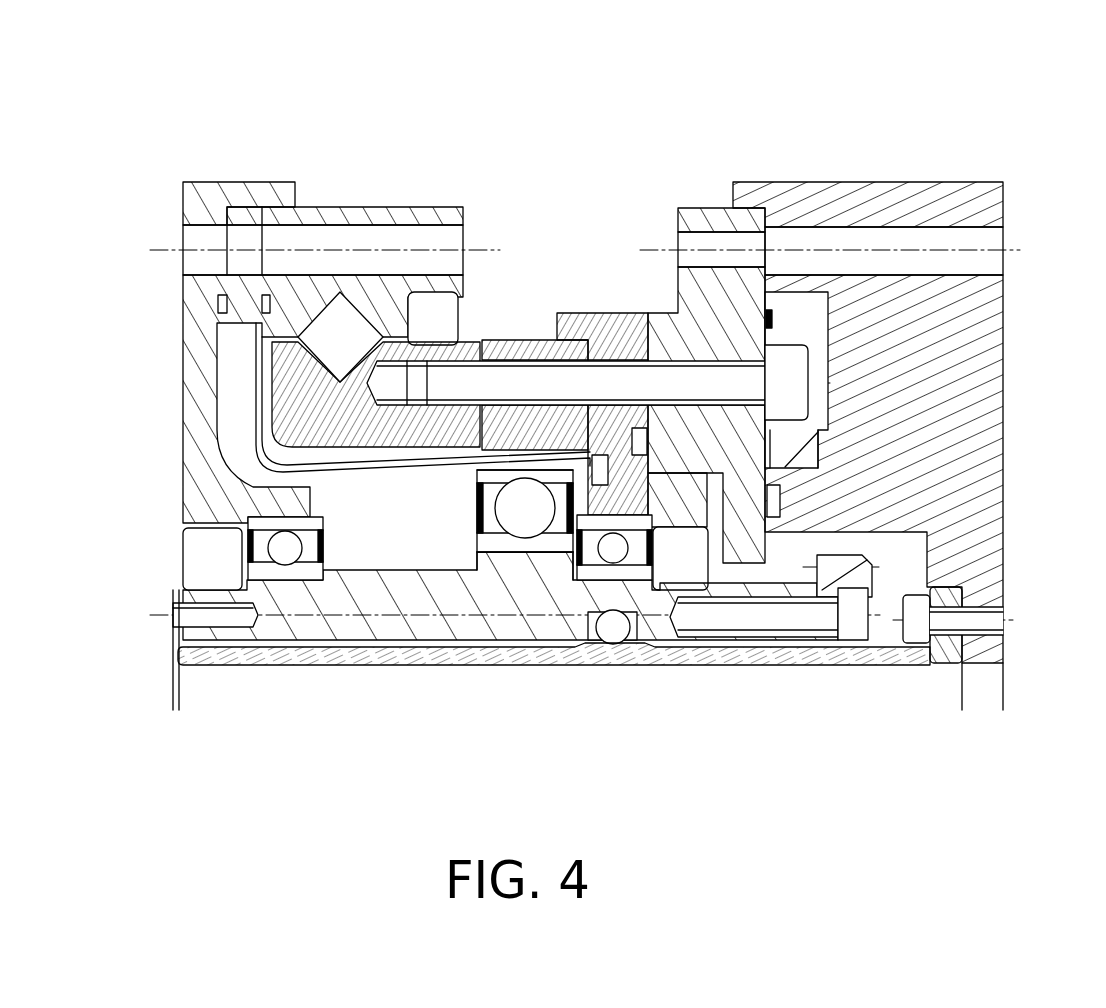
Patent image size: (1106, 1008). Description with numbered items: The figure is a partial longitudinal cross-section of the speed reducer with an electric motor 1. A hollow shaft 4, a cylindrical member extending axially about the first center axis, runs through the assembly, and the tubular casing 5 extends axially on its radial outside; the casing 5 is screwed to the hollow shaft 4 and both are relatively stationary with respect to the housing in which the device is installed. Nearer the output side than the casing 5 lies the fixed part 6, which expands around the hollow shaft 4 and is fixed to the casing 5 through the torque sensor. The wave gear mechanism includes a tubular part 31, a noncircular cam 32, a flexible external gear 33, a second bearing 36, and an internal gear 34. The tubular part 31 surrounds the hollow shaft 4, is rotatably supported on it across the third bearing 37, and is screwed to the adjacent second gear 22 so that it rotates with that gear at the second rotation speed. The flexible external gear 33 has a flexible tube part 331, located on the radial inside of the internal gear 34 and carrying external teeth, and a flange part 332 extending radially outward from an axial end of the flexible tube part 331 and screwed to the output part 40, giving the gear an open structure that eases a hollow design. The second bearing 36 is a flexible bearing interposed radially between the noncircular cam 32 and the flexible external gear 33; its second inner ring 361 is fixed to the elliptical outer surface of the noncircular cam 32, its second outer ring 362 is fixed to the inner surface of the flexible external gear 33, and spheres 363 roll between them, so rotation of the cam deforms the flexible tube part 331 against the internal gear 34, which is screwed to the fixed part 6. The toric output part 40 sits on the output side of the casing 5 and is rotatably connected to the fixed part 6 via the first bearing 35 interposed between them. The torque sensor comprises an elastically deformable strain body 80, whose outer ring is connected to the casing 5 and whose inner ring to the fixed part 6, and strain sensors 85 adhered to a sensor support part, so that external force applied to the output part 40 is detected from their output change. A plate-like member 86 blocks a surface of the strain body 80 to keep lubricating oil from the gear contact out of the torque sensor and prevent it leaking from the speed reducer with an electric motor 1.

The speed reducer with an electric motor 1 is at (490, 82).
The output part 40 is at (238, 190).
The flexible external gear 33 is at (453, 128).
The flange part 332 is at (268, 393).
The flexible tube part 331 is at (390, 462).
The first bearing 35 is at (340, 384).
The internal gear 34 is at (545, 452).
The strain body 80 is at (720, 295).
The strain sensors 85 is at (770, 308).
The plate-like member 86 is at (848, 462).
The casing 5 is at (930, 208).
The fixed part 6 is at (682, 512).
The tubular part 31 is at (352, 606).
The noncircular cam 32 is at (550, 562).
The third bearing 37 is at (621, 634).
The second bearing 36 is at (530, 737).
The second inner ring 361 is at (488, 545).
The second outer ring 362 is at (547, 472).
The spheres 363 is at (523, 512).
The second gear 22 is at (864, 578).
The hollow shaft 4 is at (810, 650).